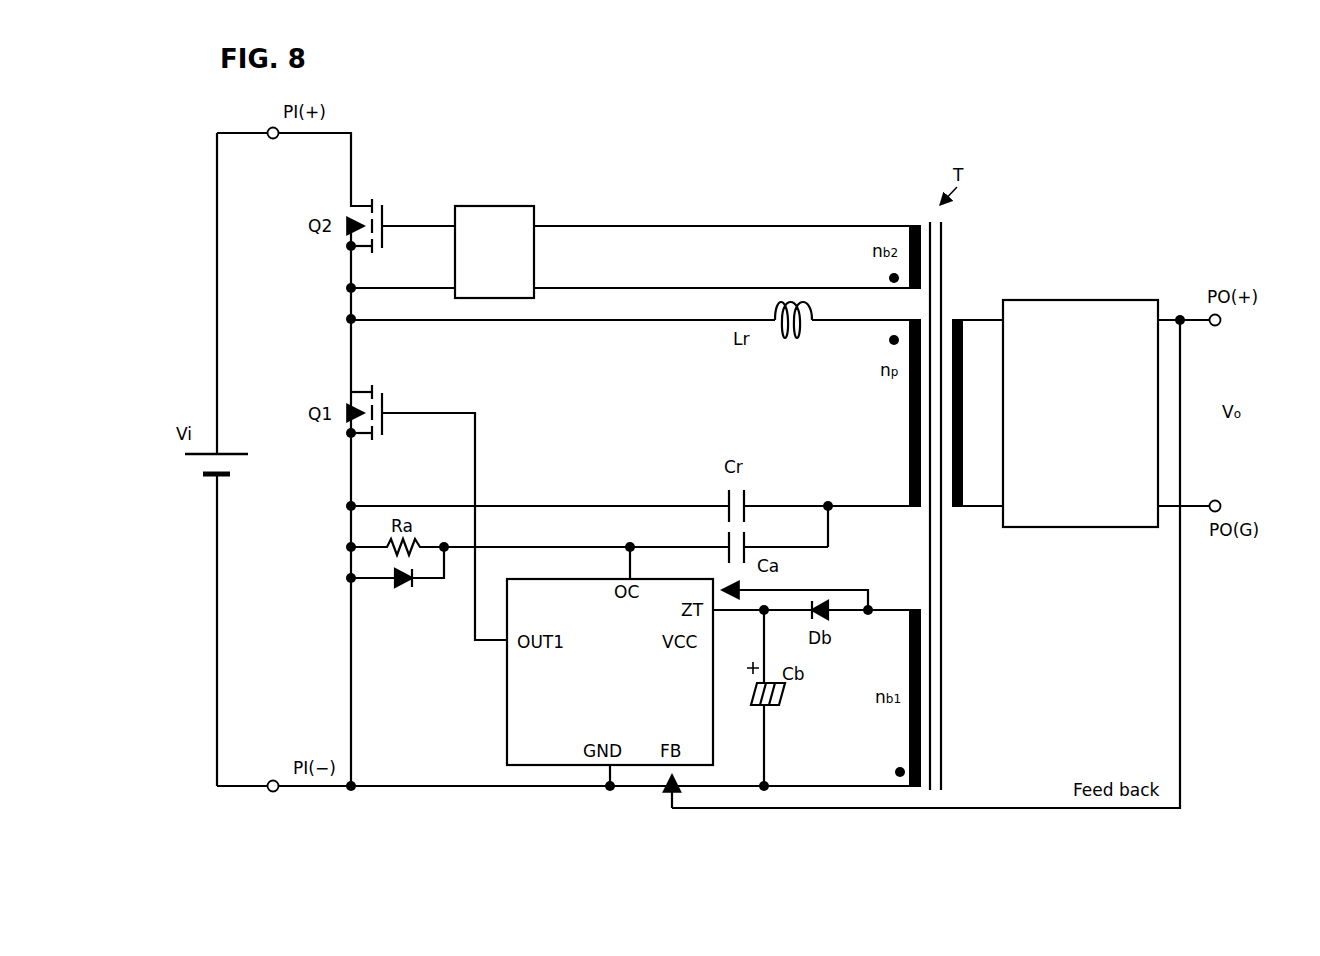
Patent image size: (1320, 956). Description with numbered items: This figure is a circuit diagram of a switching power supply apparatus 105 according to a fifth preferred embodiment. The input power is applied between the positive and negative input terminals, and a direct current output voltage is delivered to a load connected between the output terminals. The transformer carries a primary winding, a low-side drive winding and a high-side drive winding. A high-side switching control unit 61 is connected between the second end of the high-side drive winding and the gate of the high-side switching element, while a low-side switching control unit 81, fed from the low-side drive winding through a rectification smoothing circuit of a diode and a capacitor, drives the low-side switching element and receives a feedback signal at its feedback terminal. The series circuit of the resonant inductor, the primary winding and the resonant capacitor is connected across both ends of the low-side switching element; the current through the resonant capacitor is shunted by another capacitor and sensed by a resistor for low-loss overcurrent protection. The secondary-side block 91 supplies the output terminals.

The high-side switching control unit 61 is at (530, 206).
The low-side switching control unit 81 is at (507, 714).
The rectifying and smoothing circuit 91 is at (1065, 300).
The switching power supply apparatus 105 is at (1288, 276).